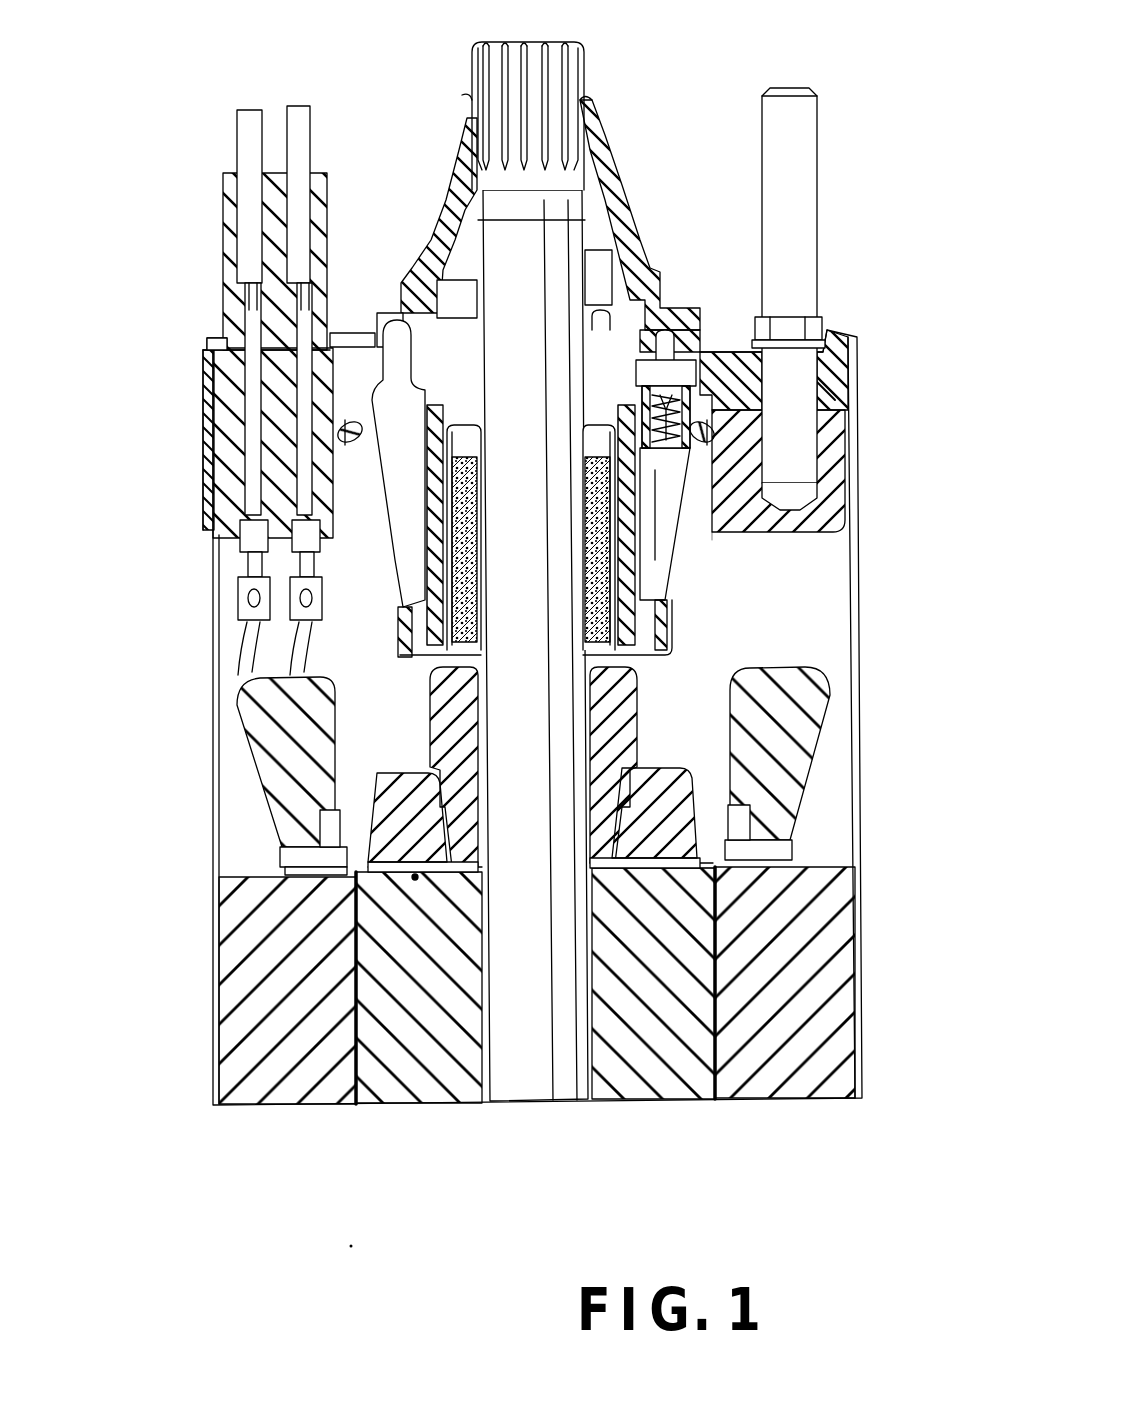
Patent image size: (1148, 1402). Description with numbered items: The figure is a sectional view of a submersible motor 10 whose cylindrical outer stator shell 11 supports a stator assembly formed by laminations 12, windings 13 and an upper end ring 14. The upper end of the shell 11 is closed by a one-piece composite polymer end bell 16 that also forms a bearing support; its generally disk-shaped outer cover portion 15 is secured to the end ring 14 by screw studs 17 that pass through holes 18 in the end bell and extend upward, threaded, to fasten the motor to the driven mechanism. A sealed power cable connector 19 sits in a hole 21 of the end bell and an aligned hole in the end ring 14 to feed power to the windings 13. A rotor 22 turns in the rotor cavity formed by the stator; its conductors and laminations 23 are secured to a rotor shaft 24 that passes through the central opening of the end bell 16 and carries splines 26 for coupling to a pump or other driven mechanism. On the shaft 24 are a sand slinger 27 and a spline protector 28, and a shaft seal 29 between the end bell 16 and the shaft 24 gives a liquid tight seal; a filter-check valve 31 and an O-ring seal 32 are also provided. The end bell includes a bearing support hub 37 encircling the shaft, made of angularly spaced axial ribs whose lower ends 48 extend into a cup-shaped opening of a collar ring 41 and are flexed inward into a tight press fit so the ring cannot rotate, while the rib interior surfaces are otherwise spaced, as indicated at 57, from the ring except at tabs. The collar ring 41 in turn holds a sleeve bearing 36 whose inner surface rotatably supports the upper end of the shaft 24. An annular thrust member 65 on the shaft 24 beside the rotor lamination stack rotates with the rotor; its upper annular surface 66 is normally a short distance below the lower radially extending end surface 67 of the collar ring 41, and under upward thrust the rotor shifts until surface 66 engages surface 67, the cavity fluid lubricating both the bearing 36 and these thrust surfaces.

The submersible motor 10 is at (187, 568).
The cylindrical outer stator shell 11 is at (213, 850).
The laminations 12 is at (235, 1025).
The windings 13 is at (245, 745).
The upper end ring 14 is at (835, 513).
The outer cover portion 15 is at (398, 304).
The end bell 16 is at (859, 357).
The screw studs 17 is at (798, 140).
The holes 18 is at (835, 388).
The sealed power cable connector 19 is at (215, 233).
The hole 21 is at (205, 350).
The rotor 22 is at (431, 1106).
The rotor laminations 23 is at (658, 1092).
The rotor shaft 24 is at (536, 1092).
The splines 26 is at (586, 68).
The sand slinger 27 is at (570, 248).
The spline protector 28 is at (600, 185).
The shaft seal 29 is at (655, 287).
The filter-check valve 31 is at (679, 353).
The O-ring seal 32 is at (740, 551).
The sleeve bearing 36 is at (636, 590).
The bearing support hub 37 is at (678, 564).
The collar ring 41 is at (417, 655).
The lower ends of the ribs 48 is at (650, 636).
The space 57 is at (430, 590).
The annular thrust member 65 is at (654, 775).
The upper annular surface 66 is at (434, 690).
The lower radially extending end surface 67 is at (650, 660).